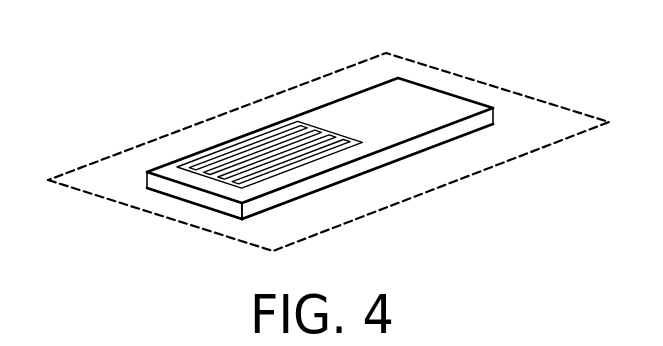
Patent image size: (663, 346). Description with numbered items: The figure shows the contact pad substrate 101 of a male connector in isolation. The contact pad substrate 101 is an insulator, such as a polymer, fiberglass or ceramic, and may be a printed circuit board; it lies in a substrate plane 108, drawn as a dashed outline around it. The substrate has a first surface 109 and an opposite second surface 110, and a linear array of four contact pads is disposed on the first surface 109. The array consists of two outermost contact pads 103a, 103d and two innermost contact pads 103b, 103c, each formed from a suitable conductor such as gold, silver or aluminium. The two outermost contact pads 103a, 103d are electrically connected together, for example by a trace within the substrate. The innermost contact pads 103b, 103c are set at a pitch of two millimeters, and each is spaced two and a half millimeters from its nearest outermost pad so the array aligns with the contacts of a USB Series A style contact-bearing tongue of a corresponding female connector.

The contact pad substrate 101 is at (378, 128).
The outermost contact pad 103a is at (188, 167).
The innermost contact pad 103b is at (232, 165).
The innermost contact pad 103c is at (290, 155).
The outermost contact pad 103d is at (343, 137).
The substrate plane 108 is at (97, 158).
The first surface 109 is at (428, 105).
The second surface 110 is at (483, 131).